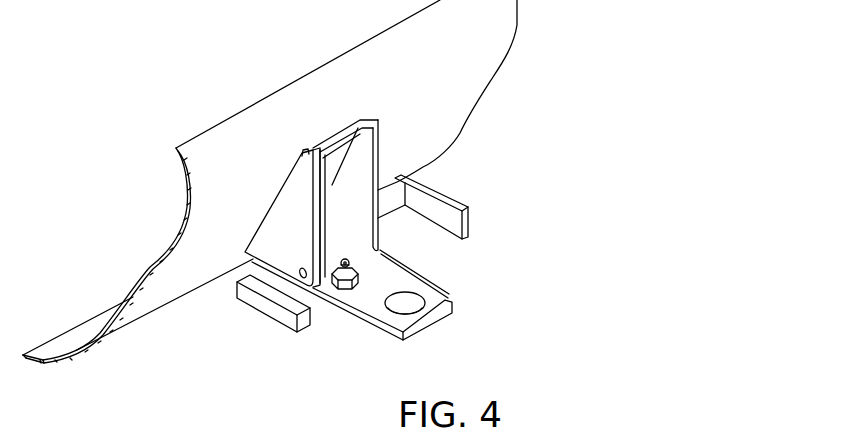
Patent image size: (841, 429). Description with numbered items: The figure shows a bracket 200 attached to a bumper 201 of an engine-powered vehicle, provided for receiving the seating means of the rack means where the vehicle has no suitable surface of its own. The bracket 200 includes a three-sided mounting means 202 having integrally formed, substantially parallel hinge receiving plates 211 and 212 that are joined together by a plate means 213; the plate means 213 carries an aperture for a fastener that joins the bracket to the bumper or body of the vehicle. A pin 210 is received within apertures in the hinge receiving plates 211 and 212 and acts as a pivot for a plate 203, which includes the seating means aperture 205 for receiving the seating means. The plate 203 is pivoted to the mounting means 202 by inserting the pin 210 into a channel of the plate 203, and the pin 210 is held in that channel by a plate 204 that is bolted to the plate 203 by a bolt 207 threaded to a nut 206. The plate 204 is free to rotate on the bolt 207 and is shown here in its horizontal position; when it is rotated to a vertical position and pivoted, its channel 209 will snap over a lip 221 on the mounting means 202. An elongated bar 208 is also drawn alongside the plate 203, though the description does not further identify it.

The bracket 200 is at (308, 342).
The bumper 201 is at (162, 297).
The three-sided mounting means 202 is at (243, 239).
The plate 203 is at (367, 290).
The plate 204 is at (407, 265).
The aperture 205 is at (410, 307).
The nut 206 is at (358, 270).
The bolt 207 is at (345, 259).
The bar 208 is at (263, 303).
The channel 209 is at (448, 222).
The pin 210 is at (302, 270).
The hinge receiving plate 211 is at (295, 189).
The hinge receiving plate 212 is at (365, 150).
The plate means 213 is at (332, 167).
The lip 221 is at (357, 118).